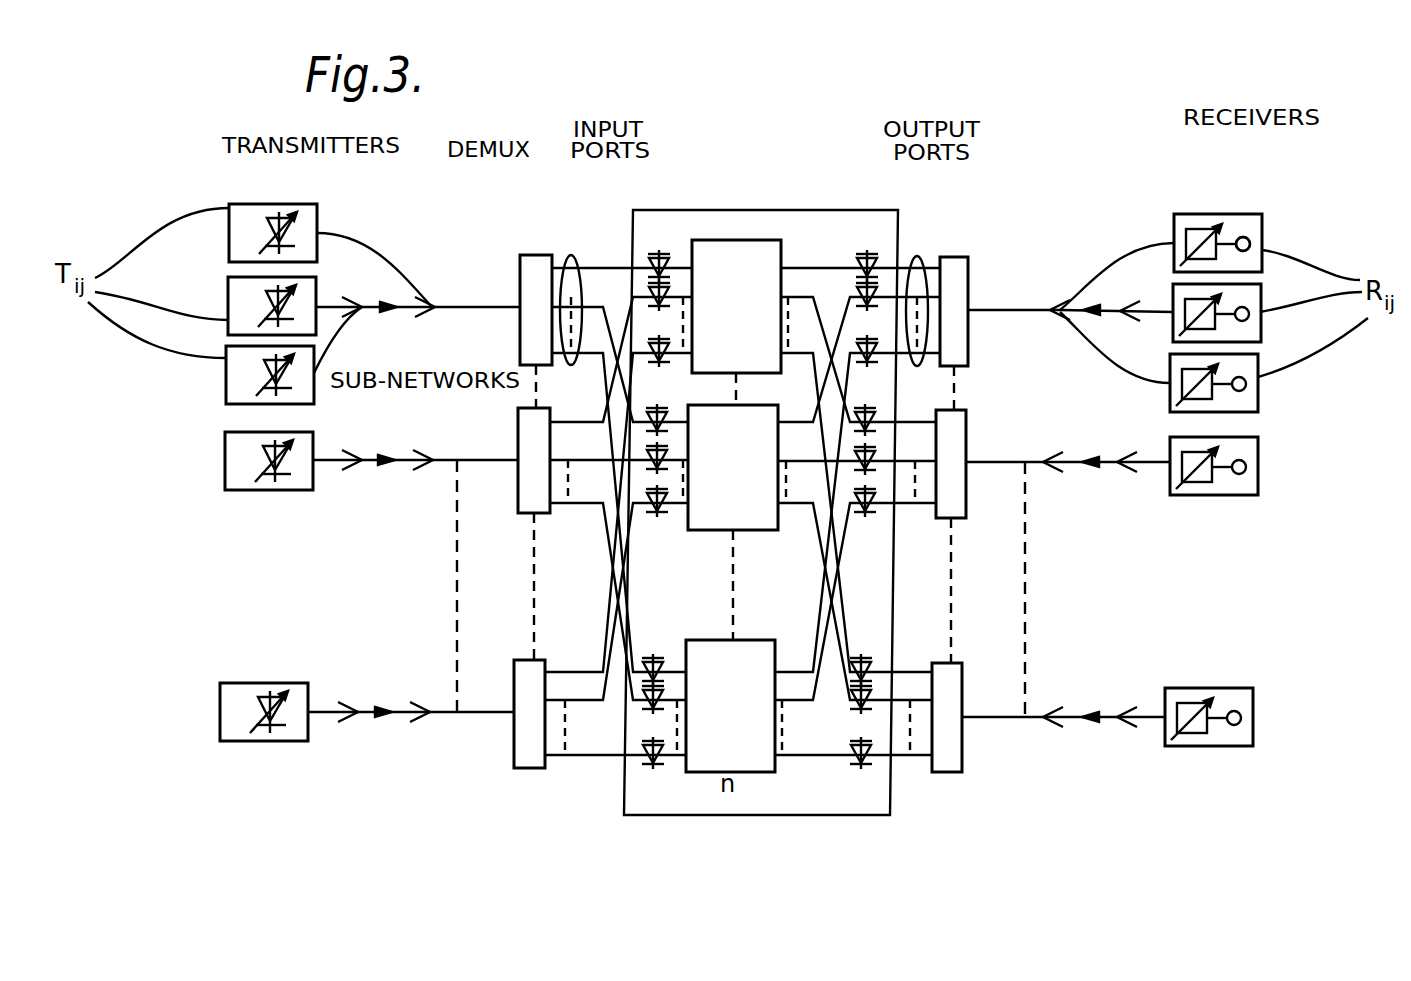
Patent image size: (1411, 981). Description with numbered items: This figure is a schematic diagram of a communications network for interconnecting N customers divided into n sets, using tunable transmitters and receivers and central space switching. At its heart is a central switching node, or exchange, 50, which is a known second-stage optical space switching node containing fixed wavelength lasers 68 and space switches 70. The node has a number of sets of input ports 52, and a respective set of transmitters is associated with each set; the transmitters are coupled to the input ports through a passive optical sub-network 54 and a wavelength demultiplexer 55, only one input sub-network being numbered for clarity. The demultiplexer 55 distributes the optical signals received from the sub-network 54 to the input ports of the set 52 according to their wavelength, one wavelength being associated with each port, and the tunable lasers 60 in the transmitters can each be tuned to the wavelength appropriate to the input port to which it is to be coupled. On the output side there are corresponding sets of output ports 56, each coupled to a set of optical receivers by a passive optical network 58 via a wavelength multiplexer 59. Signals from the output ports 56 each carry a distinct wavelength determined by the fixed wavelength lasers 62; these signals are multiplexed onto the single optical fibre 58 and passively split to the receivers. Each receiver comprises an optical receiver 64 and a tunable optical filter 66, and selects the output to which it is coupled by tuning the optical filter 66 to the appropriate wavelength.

The central switching node 50 is at (754, 188).
The set of input ports 52 is at (571, 257).
The passive optical sub-network 54 is at (452, 300).
The wavelength demultiplexer 55 is at (520, 258).
The set of output ports 56 is at (918, 257).
The passive optical network 58 is at (1013, 305).
The wavelength multiplexer 59 is at (965, 257).
The tunable lasers 60 is at (262, 218).
The fixed wavelength lasers 62 is at (880, 365).
The optical receiver 64 is at (1243, 236).
The tunable optical filter 66 is at (1193, 226).
The fixed wavelength lasers 68 is at (665, 255).
The space switches 70 is at (722, 244).